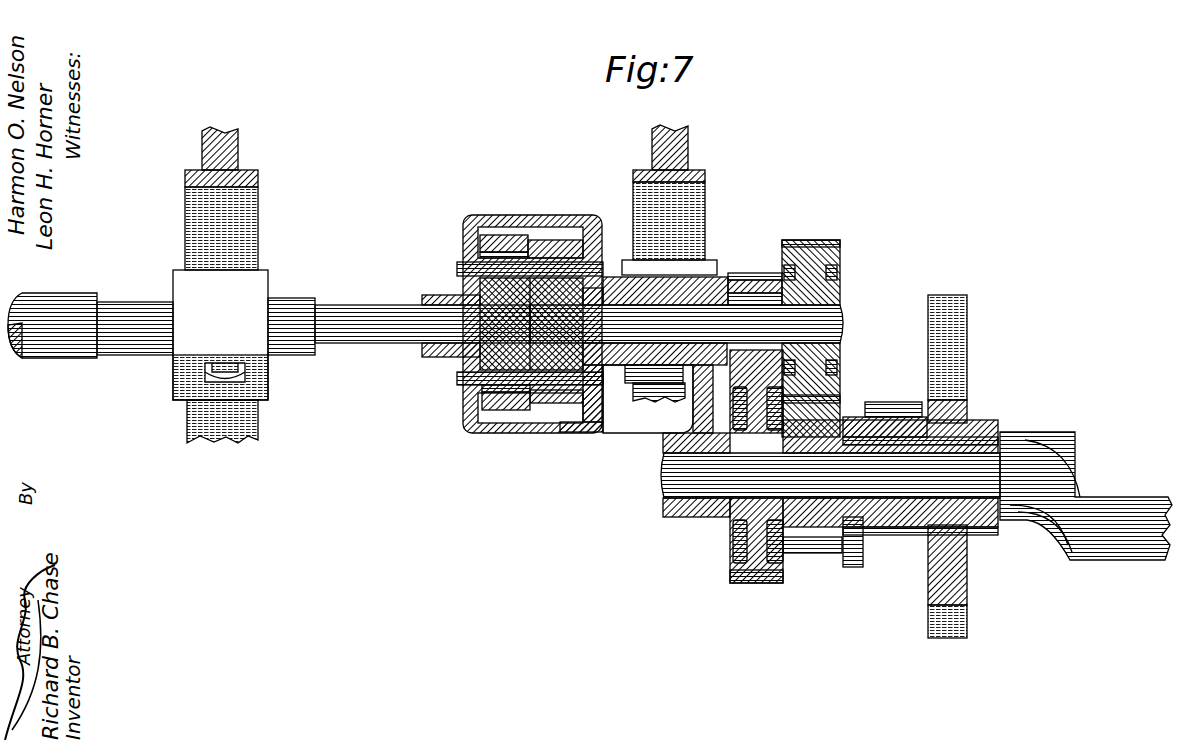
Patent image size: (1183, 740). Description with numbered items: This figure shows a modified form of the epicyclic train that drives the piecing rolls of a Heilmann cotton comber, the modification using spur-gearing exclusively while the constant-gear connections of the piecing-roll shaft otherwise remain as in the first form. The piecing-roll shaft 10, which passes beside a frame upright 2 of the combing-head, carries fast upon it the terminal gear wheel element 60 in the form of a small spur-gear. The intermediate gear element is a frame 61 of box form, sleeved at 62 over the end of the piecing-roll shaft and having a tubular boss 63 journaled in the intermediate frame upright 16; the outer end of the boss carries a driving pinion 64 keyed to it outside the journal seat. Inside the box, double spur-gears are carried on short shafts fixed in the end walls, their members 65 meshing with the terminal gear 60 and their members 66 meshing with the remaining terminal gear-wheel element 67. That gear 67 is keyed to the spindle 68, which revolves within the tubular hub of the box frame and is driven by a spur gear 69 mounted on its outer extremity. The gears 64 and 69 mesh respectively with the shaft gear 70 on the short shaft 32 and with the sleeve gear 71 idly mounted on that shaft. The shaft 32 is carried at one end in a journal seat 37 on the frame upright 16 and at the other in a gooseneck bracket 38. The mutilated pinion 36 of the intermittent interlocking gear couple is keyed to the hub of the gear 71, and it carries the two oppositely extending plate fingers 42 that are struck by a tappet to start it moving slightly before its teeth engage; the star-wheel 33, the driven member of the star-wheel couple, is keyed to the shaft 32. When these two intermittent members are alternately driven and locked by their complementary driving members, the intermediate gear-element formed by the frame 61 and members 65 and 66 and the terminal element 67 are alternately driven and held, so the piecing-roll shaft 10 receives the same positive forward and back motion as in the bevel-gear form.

The frame upright 2 is at (252, 224).
The piecing-roll shaft 10 is at (60, 300).
The intermediate frame upright 16 is at (704, 182).
The short shaft 32 is at (660, 482).
The star-wheel 33 is at (965, 376).
The mutilated pinion 36 is at (875, 403).
The journal seat 37 is at (692, 517).
The gooseneck bracket 38 is at (1080, 488).
The plate fingers 42 is at (853, 567).
The terminal gear wheel element 60 is at (462, 358).
The frame 61 is at (528, 433).
The sleeve 62 is at (440, 295).
The tubular boss 63 is at (700, 290).
The driving pinion 64 is at (760, 273).
The double spur-gear members 65 is at (494, 236).
The double spur-gear members 66 is at (548, 405).
The terminal gear-wheel element 67 is at (598, 410).
The spindle 68 is at (835, 322).
The spur gear 69 is at (840, 265).
The shaft gear 70 is at (760, 584).
The sleeve gear 71 is at (814, 554).